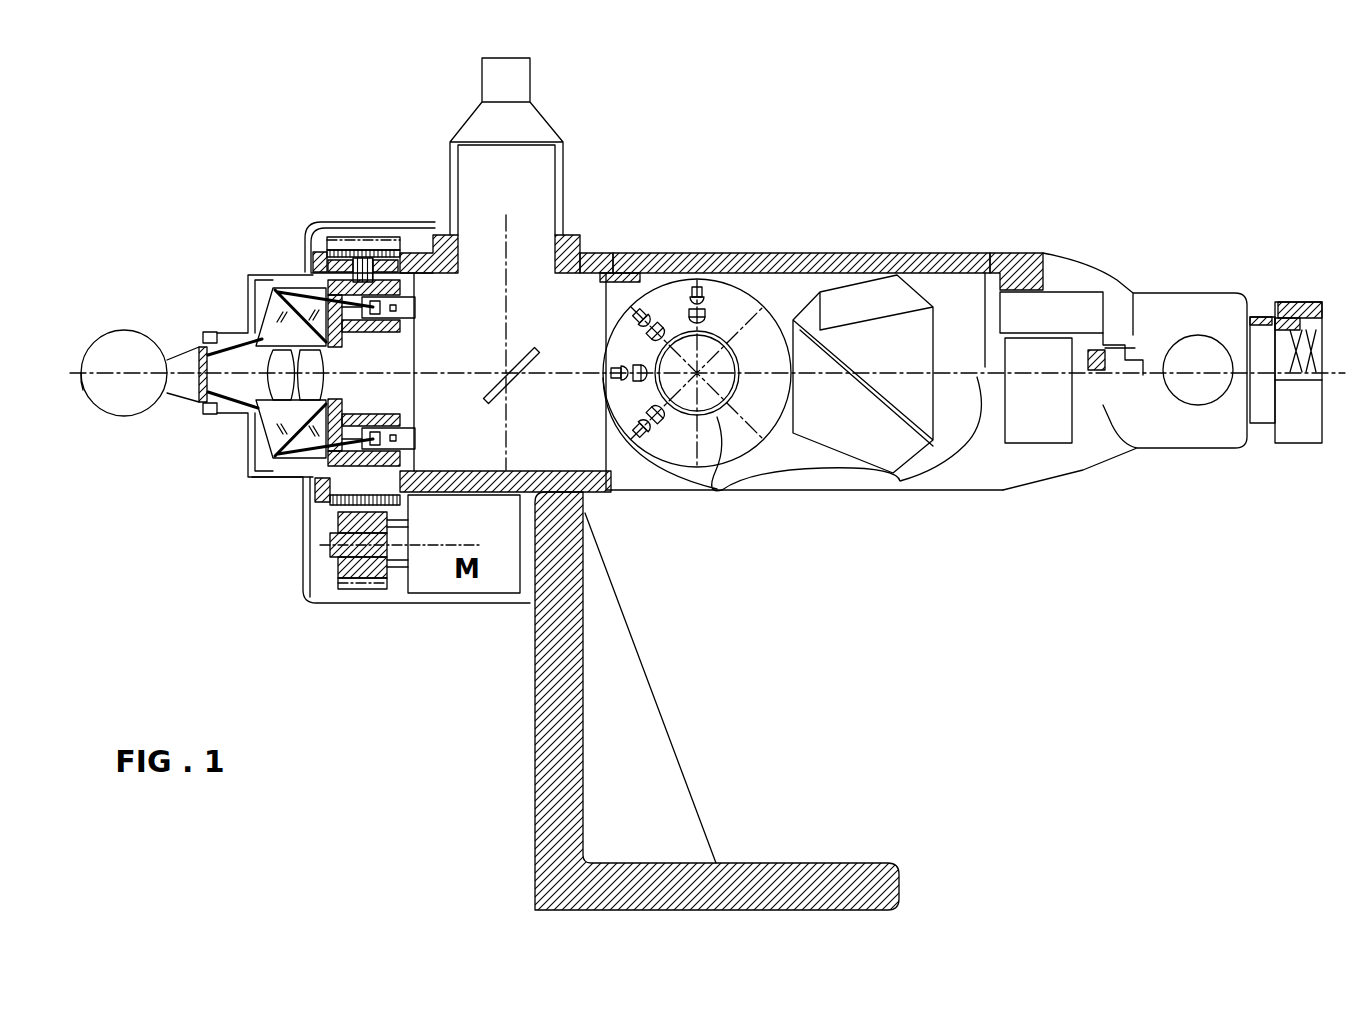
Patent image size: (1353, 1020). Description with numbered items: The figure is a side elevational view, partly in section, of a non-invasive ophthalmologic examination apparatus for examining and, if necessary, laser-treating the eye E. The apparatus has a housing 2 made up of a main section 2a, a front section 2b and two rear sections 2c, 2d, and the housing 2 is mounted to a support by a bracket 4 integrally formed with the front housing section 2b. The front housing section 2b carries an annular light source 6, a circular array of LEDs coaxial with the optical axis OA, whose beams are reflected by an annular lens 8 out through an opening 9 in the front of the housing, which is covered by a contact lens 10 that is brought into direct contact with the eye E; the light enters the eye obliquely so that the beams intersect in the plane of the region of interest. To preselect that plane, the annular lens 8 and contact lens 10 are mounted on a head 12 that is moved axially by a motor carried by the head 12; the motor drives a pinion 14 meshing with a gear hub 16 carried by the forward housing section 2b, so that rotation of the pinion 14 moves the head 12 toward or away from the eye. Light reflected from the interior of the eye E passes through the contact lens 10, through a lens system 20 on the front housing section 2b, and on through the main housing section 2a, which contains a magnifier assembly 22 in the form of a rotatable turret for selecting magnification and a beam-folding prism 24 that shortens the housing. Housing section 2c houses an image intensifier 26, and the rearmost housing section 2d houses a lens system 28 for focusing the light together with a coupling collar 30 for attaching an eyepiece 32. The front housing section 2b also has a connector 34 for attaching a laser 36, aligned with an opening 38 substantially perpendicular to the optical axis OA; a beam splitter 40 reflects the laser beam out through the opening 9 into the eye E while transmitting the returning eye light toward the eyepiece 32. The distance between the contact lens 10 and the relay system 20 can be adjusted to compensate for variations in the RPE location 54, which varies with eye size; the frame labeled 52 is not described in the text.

The eye E is at (103, 358).
The RPE location 54 is at (80, 395).
The contact lens 10 is at (170, 352).
The opening 9 is at (197, 403).
The frame 52 is at (240, 330).
The annular lens 8 is at (280, 286).
The lens system 20 is at (268, 378).
The annular light source 6 is at (405, 300).
The head 12 is at (315, 496).
The gear hub 16 is at (328, 520).
The pinion 14 is at (334, 586).
The housing 2 is at (813, 242).
The main section 2a is at (768, 253).
The front section 2b is at (587, 253).
The rear section 2c is at (1030, 253).
The rear section 2d is at (1200, 296).
The connector 34 is at (582, 237).
The laser 36 is at (565, 166).
The opening 38 is at (540, 280).
The optical axis OA is at (430, 372).
The beam splitter 40 is at (509, 385).
The magnifier assembly 22 is at (727, 481).
The beam-folding prism 24 is at (867, 470).
The image intensifier 26 is at (1033, 432).
The lens system 28 is at (1113, 370).
The coupling collar 30 is at (1258, 422).
The eyepiece 32 is at (1305, 425).
The bracket 4 is at (558, 782).